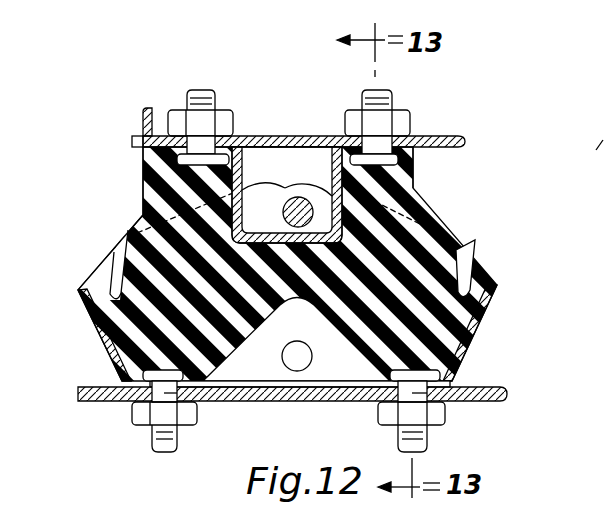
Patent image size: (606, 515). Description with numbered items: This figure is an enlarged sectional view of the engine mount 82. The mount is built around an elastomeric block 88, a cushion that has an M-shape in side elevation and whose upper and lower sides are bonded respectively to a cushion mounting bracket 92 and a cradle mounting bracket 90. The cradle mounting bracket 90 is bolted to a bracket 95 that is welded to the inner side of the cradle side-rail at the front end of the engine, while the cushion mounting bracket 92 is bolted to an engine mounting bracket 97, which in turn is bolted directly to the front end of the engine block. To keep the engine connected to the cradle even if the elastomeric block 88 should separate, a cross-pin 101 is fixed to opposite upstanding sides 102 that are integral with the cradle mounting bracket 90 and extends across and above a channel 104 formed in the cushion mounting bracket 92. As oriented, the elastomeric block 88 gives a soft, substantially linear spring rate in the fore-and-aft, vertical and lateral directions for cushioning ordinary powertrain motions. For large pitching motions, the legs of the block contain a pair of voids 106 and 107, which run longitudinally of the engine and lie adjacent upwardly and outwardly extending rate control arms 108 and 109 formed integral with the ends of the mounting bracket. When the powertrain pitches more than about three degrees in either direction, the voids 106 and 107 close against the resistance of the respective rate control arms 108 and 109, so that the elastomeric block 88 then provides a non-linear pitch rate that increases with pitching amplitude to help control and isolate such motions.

The engine mount 82 is at (458, 232).
The elastomeric block 88 is at (413, 185).
The cradle mounting bracket 90 is at (106, 348).
The cushion mounting bracket 92 is at (143, 124).
The bracket 95 is at (488, 392).
The engine mounting bracket 97 is at (449, 137).
The cross-pin 101 is at (297, 197).
The upstanding sides 102 is at (262, 190).
The channel 104 is at (313, 222).
The void 106 is at (116, 268).
The void 107 is at (470, 260).
The rate control arm 108 is at (96, 301).
The rate control arm 109 is at (483, 330).